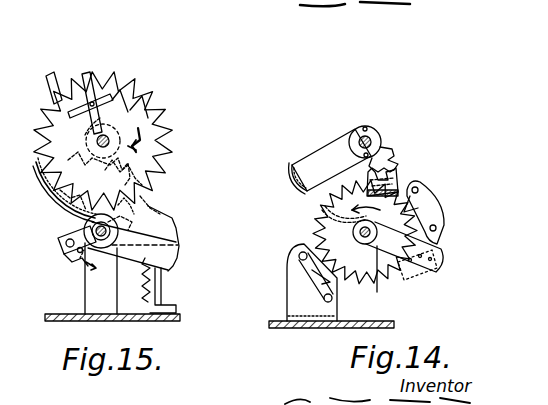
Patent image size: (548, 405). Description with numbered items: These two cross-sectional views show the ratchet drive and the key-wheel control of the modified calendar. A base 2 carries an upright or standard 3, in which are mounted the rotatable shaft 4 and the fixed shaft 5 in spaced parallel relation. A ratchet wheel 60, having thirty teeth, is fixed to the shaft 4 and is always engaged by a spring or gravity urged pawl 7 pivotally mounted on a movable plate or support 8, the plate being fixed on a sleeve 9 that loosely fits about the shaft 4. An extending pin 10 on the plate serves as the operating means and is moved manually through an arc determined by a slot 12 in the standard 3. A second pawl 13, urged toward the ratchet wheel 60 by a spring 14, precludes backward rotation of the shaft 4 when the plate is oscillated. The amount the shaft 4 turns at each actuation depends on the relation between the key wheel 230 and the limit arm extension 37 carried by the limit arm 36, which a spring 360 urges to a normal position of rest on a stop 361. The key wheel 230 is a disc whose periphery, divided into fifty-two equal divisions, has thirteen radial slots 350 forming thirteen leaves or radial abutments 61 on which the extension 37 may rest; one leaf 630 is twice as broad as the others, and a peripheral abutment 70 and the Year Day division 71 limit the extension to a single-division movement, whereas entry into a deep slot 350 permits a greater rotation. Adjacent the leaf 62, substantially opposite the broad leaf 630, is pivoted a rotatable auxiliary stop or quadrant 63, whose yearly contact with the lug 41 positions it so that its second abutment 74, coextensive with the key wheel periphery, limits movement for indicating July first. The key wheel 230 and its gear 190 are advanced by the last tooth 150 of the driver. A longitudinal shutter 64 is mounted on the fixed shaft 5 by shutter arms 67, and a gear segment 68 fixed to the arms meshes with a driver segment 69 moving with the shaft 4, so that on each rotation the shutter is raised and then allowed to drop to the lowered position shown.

In FIG. 15, the base 2 is at (65, 321).
In FIG. 14, the base 2 is at (310, 328).
In FIG. 15, the upright or standard 3 is at (85, 296).
In FIG. 14, the upright or standard 3 is at (288, 297).
In FIG. 15, the rotatable shaft 4 is at (80, 232).
In FIG. 14, the rotatable shaft 4 is at (353, 231).
In FIG. 14, the fixed shaft 5 is at (380, 140).
In FIG. 14, the pawl 7 is at (430, 214).
In FIG. 14, the movable plate or support 8 is at (376, 277).
In FIG. 14, the sleeve 9 is at (359, 243).
In FIG. 15, the extending pin or operating lever 10 is at (84, 262).
In FIG. 15, the slot 12 is at (128, 224).
In FIG. 14, the second pawl 13 is at (335, 282).
In FIG. 14, the spring 14 is at (324, 282).
In FIG. 15, the limit arm 36 is at (178, 232).
In FIG. 15, the limit arm extension 37 is at (162, 198).
In FIG. 15, the lug 41 is at (50, 78).
In FIG. 14, the ratchet wheel 60 is at (408, 268).
In FIG. 15, the leaves or radial abutments 61 is at (110, 92).
In FIG. 15, the leaf or abutment 62 is at (80, 84).
In FIG. 15, the auxiliary stop or quadrant 63 is at (105, 112).
In FIG. 15, the shutter 64 is at (40, 176).
In FIG. 14, the shutter 64 is at (298, 182).
In FIG. 15, the shutter arms 67 is at (36, 170).
In FIG. 14, the shutter arms 67 is at (325, 152).
In FIG. 14, the gear segment 68 is at (386, 156).
In FIG. 14, the driver segment 69 is at (396, 182).
In FIG. 15, the peripheral abutment or division 70 is at (163, 156).
In FIG. 15, the Year Day stop or division 71 is at (105, 231).
In FIG. 15, the second abutment 74 is at (76, 96).
In FIG. 15, the last tooth on driver 150 is at (130, 210).
In FIG. 15, the gear 190 is at (126, 104).
In FIG. 15, the key wheel 230 is at (140, 106).
In FIG. 15, the radial slots 350 is at (150, 120).
In FIG. 15, the spring 360 is at (138, 280).
In FIG. 15, the stop 361 is at (161, 283).
In FIG. 15, the broad leaf or abutment 630 is at (82, 206).